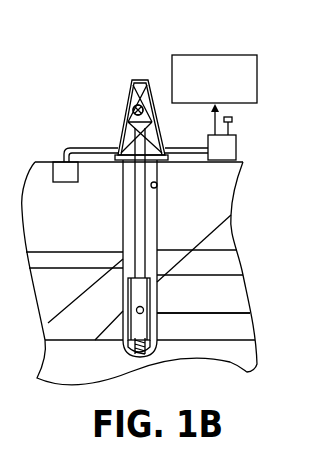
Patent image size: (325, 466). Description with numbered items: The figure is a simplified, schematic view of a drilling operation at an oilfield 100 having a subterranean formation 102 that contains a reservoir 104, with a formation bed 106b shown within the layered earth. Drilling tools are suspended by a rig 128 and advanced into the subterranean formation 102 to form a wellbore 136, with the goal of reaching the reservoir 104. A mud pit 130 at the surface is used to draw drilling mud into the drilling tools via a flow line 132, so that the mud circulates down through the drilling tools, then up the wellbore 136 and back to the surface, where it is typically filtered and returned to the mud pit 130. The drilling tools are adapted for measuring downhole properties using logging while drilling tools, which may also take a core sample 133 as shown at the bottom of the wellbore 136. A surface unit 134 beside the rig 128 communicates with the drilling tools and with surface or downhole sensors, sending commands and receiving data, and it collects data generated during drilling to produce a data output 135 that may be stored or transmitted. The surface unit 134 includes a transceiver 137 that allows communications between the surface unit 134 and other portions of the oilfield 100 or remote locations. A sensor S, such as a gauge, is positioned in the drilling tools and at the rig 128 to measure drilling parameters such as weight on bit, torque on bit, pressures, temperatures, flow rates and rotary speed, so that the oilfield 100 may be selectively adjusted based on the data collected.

The oilfield 100 is at (80, 83).
The subterranean formation 102 is at (168, 254).
The reservoir 104 is at (223, 306).
The dipping formation bed 106b is at (123, 303).
The rig 128 is at (125, 116).
The mud pit 130 is at (64, 183).
The flow line 132 is at (62, 155).
The core sample 133 is at (128, 348).
The surface unit 134 is at (236, 150).
The data output 135 is at (215, 55).
The wellbore 136 is at (158, 186).
The transceiver 137 is at (233, 126).
The sensor S is at (131, 92).